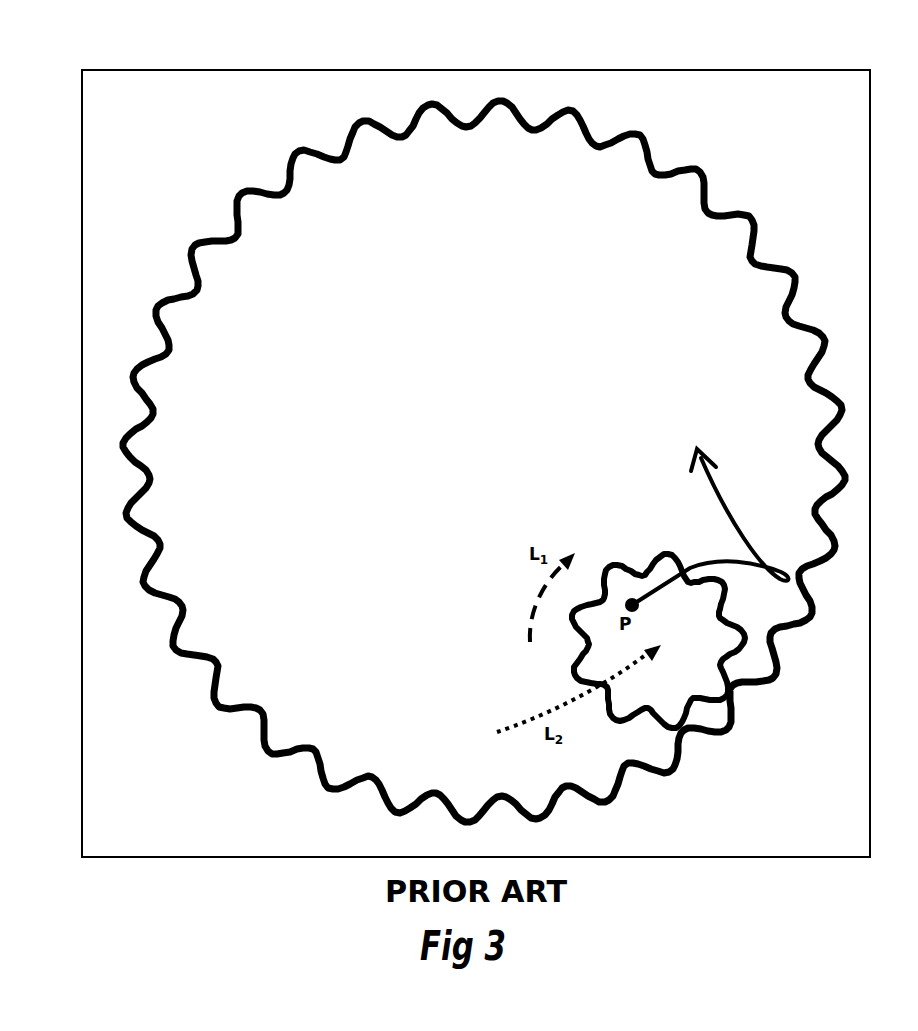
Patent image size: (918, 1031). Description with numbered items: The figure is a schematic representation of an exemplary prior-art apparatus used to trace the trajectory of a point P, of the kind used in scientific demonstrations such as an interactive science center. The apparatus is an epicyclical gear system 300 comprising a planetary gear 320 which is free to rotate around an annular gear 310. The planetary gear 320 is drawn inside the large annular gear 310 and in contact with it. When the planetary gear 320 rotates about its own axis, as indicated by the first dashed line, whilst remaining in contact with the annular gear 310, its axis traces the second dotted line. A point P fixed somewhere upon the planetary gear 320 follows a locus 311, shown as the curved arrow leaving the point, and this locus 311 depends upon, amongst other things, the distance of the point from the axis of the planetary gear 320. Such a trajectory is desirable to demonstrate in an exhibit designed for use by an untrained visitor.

The epicyclical gear system 300 is at (135, 162).
The annular gear 310 is at (292, 148).
The locus 311 is at (697, 449).
The planetary gear 320 is at (692, 673).